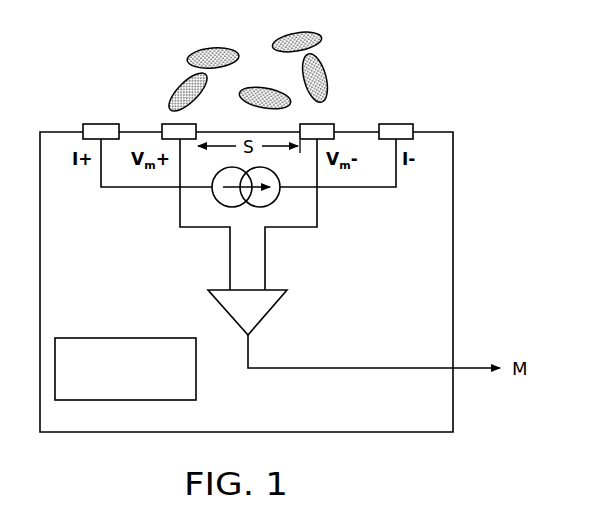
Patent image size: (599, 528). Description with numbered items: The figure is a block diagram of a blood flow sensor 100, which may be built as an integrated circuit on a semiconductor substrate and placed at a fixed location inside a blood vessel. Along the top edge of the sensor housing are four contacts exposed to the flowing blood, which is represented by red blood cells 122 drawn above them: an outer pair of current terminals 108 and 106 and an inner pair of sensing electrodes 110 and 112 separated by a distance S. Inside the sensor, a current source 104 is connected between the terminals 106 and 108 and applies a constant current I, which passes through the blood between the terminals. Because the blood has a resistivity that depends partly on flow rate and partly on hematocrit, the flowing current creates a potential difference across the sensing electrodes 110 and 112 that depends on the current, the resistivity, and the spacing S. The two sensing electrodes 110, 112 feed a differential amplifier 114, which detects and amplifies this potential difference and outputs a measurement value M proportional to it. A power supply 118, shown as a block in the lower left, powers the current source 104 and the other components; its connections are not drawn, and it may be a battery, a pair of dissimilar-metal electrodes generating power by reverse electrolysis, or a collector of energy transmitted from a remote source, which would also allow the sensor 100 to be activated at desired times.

The blood flow sensor 100 is at (455, 233).
The current source 104 is at (280, 202).
The terminal 106 is at (406, 120).
The terminal 108 is at (93, 124).
The sensing electrode 110 is at (170, 124).
The sensing electrode 112 is at (334, 124).
The differential amplifier 114 is at (268, 310).
The power supply 118 is at (127, 338).
The red blood cells 122 is at (278, 78).